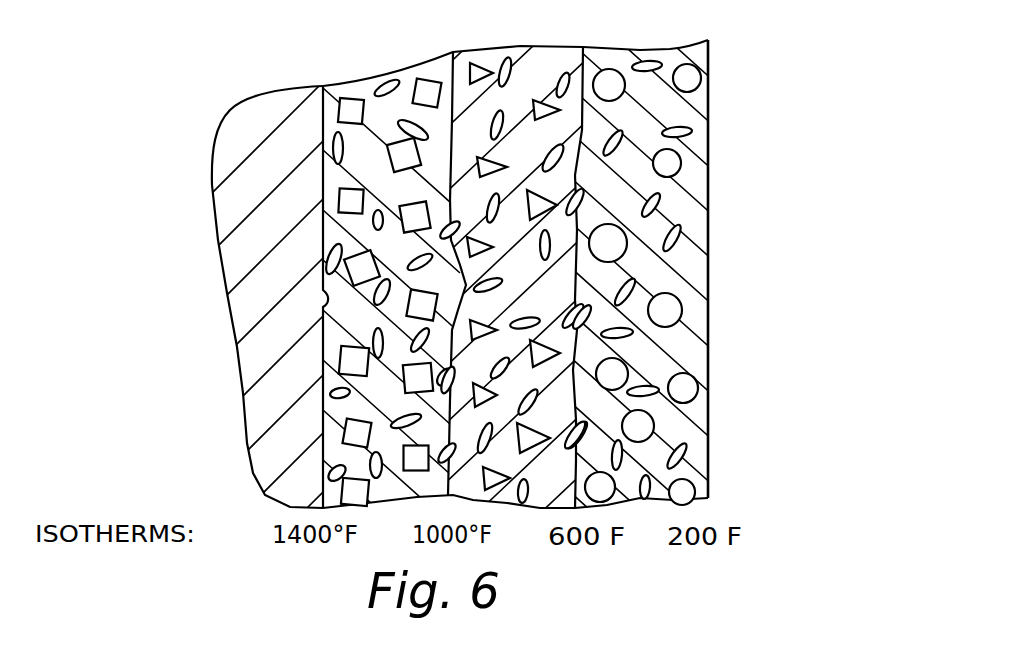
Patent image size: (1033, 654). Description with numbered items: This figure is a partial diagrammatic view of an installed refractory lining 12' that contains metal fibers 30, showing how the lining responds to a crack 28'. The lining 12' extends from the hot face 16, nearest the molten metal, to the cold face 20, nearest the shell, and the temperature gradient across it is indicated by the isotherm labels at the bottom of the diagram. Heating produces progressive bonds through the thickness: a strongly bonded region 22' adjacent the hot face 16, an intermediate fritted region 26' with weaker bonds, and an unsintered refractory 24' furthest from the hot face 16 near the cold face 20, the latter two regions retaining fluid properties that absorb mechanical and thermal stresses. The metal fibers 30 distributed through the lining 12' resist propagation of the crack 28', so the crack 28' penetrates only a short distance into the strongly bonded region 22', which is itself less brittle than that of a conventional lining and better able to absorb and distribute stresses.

The hot face 16 is at (325, 174).
The crack 28' is at (217, 297).
The refractory lining including metal fibers 12' is at (451, 311).
The strongly bonded region 22' is at (289, 335).
The fritted region 26' is at (610, 304).
The unsintered refractory 24' is at (679, 311).
The cold face 20 is at (712, 240).
The metal fibers 30 is at (345, 400).